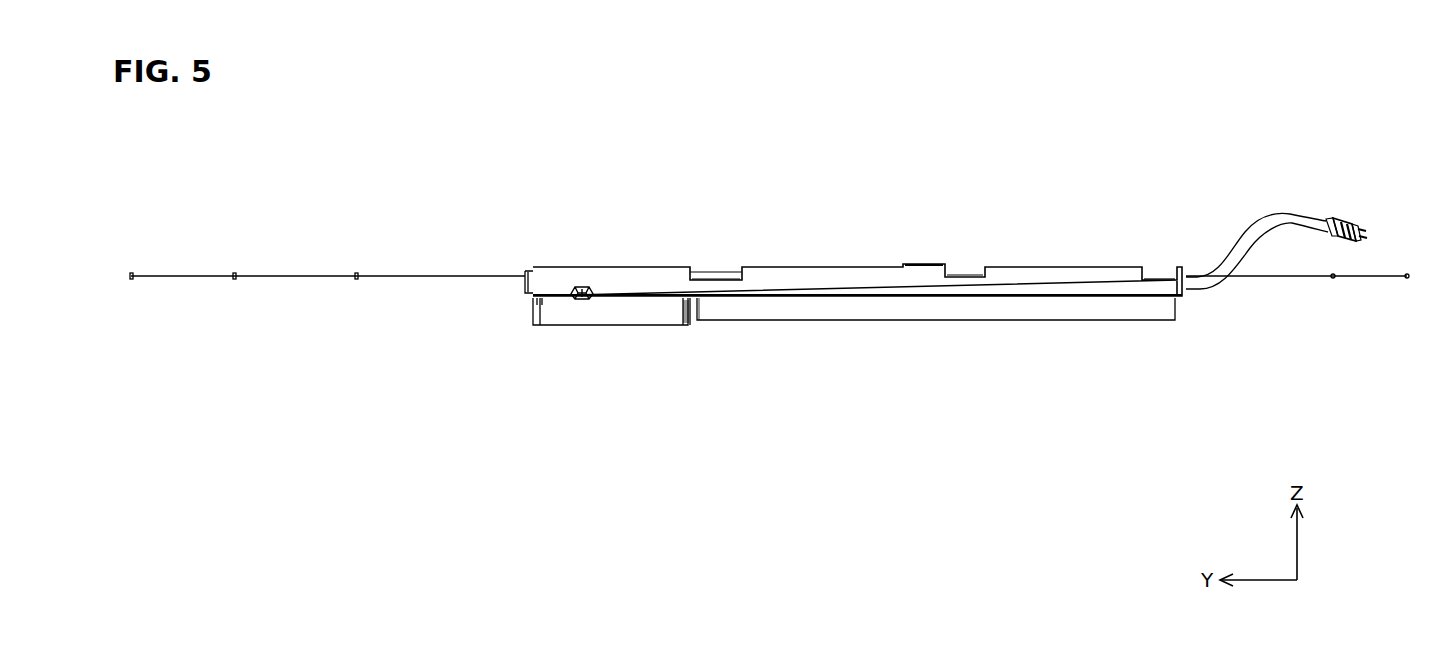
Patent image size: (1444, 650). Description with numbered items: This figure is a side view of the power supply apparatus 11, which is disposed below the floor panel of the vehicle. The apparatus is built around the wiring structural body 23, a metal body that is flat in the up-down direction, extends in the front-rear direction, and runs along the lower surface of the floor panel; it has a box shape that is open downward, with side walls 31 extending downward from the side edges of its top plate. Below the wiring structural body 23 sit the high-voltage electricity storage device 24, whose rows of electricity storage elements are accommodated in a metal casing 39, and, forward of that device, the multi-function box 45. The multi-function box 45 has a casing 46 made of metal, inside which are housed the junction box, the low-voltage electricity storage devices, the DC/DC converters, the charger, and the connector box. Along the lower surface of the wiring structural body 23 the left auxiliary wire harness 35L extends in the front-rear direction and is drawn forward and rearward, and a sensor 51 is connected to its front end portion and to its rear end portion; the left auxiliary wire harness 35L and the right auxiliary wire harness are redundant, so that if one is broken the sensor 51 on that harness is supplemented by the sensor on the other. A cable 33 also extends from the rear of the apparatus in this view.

The power supply apparatus 11 is at (853, 230).
The wiring structural body 23 is at (814, 278).
The side walls 31 is at (875, 278).
The high-voltage electricity storage device 24 is at (903, 313).
The metal casing 39 is at (1052, 325).
The multi-function box 45 is at (647, 313).
The casing 46 is at (584, 327).
The cable with plug 33 is at (1264, 212).
The sensor 51 is at (131, 273).
The left auxiliary wire harness 35L is at (432, 276).